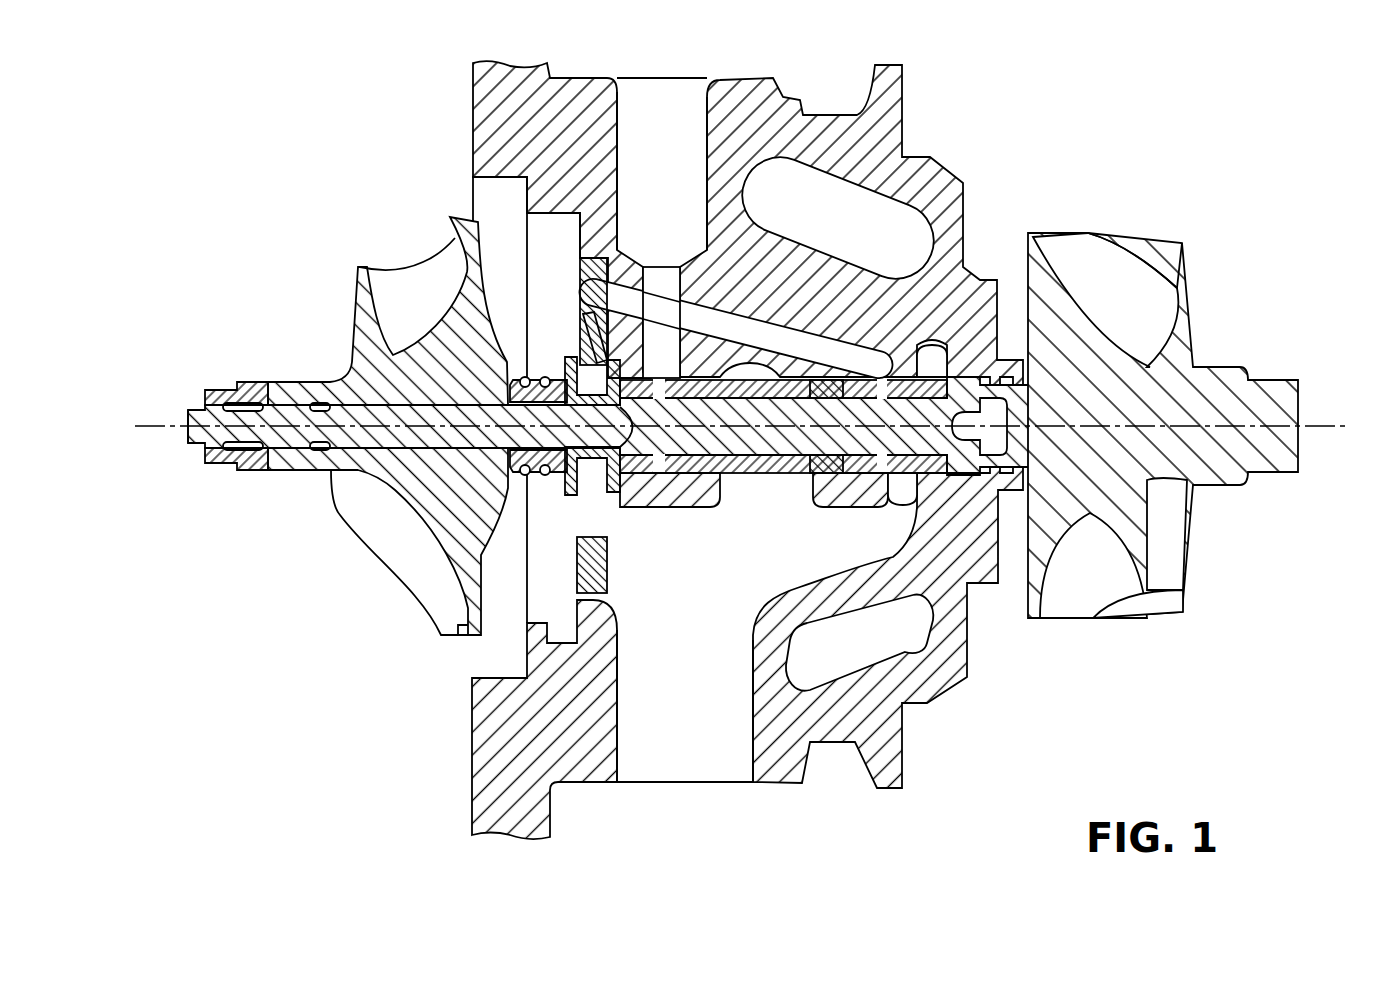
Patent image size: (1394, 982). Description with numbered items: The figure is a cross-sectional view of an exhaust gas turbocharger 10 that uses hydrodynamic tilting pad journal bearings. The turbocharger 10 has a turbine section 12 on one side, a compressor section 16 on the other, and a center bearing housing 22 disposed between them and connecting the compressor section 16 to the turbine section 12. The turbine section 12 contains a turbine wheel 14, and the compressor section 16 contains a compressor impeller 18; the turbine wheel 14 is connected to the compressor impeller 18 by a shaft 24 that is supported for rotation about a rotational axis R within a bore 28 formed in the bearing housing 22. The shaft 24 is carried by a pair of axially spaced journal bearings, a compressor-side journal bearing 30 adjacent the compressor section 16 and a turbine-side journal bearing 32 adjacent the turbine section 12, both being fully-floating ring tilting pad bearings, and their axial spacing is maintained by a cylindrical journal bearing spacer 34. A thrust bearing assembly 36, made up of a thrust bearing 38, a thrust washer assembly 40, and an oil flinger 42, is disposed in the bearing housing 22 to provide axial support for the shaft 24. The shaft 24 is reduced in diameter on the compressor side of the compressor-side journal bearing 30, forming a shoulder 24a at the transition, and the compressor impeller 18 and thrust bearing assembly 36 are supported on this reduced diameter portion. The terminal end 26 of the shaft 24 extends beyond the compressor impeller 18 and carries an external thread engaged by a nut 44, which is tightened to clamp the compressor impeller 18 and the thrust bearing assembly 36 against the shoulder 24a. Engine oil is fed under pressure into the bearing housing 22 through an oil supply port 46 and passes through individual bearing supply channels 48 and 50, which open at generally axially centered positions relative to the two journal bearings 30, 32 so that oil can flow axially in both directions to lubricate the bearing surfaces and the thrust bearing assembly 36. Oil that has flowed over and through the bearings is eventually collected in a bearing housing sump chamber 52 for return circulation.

The exhaust gas turbocharger 10 is at (698, 432).
The turbine section 12 is at (1163, 329).
The turbine wheel 14 is at (1177, 353).
The compressor section 16 is at (376, 406).
The compressor impeller 18 is at (360, 310).
The center bearing housing 22 is at (780, 97).
The shaft 24 is at (288, 440).
The shoulder 24a is at (700, 465).
The terminal end 26 is at (188, 436).
The bore 28 is at (768, 398).
The compressor-side journal bearing 30 is at (645, 497).
The turbine-side journal bearing 32 is at (915, 477).
The journal bearing spacer 34 is at (835, 490).
The thrust bearing assembly 36 is at (478, 466).
The thrust bearing 38 is at (509, 460).
The thrust washer assembly 40 is at (573, 470).
The oil flinger 42 is at (525, 455).
The nut 44 is at (217, 466).
The oil supply port 46 is at (623, 92).
The bearing supply channel 48 is at (660, 282).
The bearing supply channel 50 is at (837, 357).
The bearing housing sump chamber 52 is at (711, 650).
The rotational axis R is at (1325, 413).